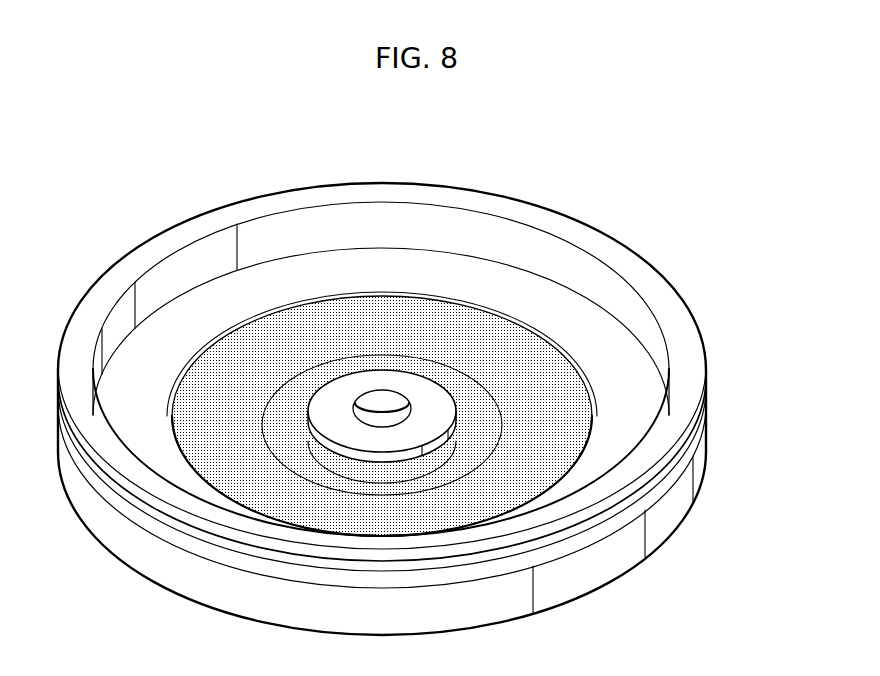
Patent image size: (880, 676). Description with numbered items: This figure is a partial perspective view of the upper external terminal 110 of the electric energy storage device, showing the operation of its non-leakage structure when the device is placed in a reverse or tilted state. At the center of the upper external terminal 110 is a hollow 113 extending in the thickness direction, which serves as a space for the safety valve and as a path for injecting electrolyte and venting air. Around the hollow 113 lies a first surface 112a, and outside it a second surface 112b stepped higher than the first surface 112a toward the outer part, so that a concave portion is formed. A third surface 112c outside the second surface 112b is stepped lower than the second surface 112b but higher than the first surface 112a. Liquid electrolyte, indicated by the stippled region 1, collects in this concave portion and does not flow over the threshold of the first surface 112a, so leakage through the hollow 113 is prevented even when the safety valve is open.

The sample disc 1 is at (313, 335).
The upper external terminal 110 is at (522, 180).
The hollow 113 is at (387, 405).
The first surface 112a is at (437, 407).
The second surface 112b is at (475, 438).
The third surface 112c is at (550, 433).